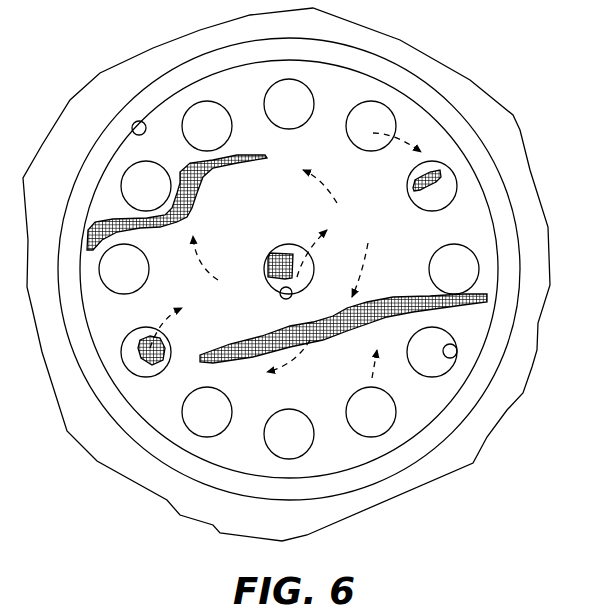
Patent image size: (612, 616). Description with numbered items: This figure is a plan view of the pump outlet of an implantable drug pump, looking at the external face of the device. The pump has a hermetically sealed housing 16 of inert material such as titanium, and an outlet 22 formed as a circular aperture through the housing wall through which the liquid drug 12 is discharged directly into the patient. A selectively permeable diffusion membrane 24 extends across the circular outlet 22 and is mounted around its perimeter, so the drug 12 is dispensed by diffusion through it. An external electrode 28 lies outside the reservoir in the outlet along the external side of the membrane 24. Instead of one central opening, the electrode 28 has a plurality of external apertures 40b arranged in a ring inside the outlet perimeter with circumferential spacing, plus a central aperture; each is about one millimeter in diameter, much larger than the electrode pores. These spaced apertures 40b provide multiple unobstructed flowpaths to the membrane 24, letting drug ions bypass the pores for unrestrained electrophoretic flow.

The liquid drug 12 is at (368, 261).
The housing 16 is at (468, 75).
The outlet 22 is at (143, 133).
The diffusion membrane 24 is at (285, 255).
The external electrode 28 is at (255, 217).
The external apertures 40b is at (280, 290).